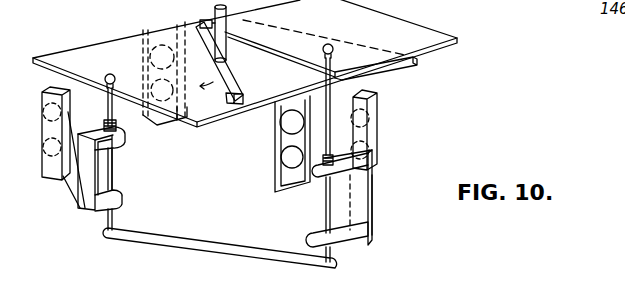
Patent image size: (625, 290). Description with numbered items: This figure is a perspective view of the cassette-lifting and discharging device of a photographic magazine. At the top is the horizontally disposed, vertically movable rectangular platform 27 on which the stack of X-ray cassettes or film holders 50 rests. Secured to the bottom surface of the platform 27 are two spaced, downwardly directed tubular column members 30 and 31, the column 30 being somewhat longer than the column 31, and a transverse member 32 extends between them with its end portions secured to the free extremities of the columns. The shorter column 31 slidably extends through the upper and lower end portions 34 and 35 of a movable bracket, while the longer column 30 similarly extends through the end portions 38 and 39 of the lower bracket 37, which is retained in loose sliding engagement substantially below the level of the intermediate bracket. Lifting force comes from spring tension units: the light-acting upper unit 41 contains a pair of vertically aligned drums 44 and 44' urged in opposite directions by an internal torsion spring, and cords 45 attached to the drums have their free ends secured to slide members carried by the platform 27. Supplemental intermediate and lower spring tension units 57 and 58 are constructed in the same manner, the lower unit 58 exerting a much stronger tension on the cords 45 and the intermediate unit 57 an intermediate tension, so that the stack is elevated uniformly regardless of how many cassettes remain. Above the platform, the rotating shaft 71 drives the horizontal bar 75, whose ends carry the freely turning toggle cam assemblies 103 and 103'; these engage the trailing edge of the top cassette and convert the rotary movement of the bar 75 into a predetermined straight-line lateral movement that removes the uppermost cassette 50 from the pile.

The platform 27 is at (78, 58).
The cassette 50 is at (436, 40).
The shaft 71 is at (224, 45).
The toggle cam assembly 103 is at (193, 15).
The horizontal bar 75 is at (228, 71).
The toggle cam assembly 103' is at (258, 92).
The spring tension unit 41 is at (146, 48).
The drum 44 is at (205, 91).
The drum 44' is at (274, 178).
The intermediate spring tension unit 57 is at (46, 134).
The cord 45 is at (85, 203).
The tubular column member 31 is at (116, 152).
The upper end portion 34 is at (118, 143).
The lower end portion 35 is at (124, 198).
The transverse member 32 is at (243, 254).
The lower spring tension unit 58 is at (378, 116).
The lower bracket 37 is at (348, 158).
The end portion 38 is at (322, 176).
The end portion 39 is at (348, 247).
The tubular column member 30 is at (327, 220).